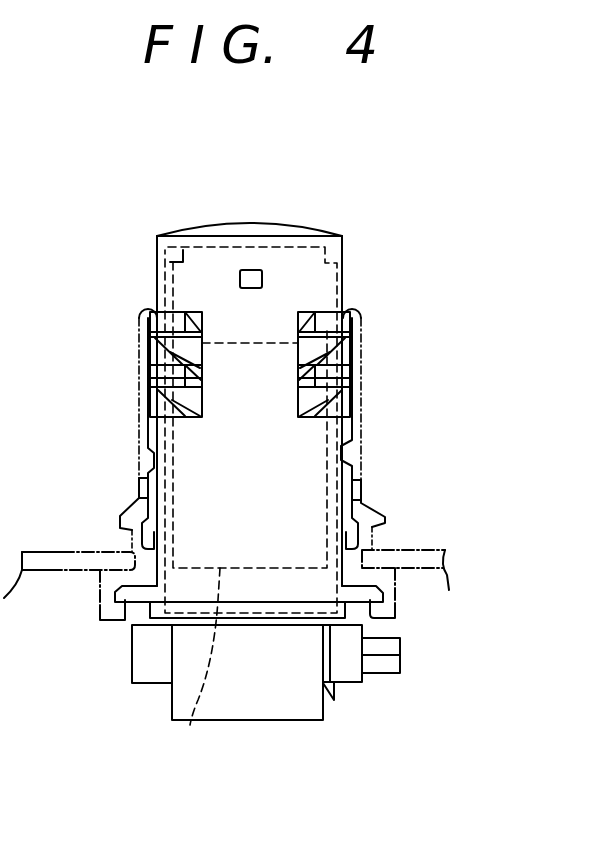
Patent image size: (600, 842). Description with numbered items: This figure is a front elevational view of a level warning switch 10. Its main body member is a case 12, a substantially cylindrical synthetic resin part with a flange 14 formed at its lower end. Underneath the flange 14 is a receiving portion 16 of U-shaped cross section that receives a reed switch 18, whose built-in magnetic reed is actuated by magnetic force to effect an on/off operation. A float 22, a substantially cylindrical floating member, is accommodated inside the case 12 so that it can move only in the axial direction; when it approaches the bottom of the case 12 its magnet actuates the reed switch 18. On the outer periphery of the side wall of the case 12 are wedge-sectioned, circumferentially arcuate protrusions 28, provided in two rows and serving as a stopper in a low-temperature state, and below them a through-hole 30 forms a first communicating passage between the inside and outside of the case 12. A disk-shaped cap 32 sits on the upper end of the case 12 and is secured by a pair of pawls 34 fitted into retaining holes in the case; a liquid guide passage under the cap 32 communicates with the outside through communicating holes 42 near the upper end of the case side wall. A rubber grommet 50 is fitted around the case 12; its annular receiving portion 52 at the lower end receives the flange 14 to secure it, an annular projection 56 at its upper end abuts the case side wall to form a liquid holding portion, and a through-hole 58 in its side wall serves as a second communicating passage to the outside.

The level warning switch 10 is at (399, 192).
The case 12 is at (342, 262).
The flange 14 is at (122, 608).
The receiving portion 16 is at (252, 720).
The reed switch 18 is at (152, 676).
The float 22 is at (190, 725).
The protrusions 28 is at (175, 318).
The through-hole 30 is at (355, 488).
The cap 32 is at (248, 234).
The pawls 34 is at (192, 228).
The communicating holes 42 is at (262, 270).
The grommet 50 is at (362, 412).
The annular receiving portion 52 is at (105, 606).
The annular projection 56 is at (352, 442).
The through-hole 58 is at (148, 492).